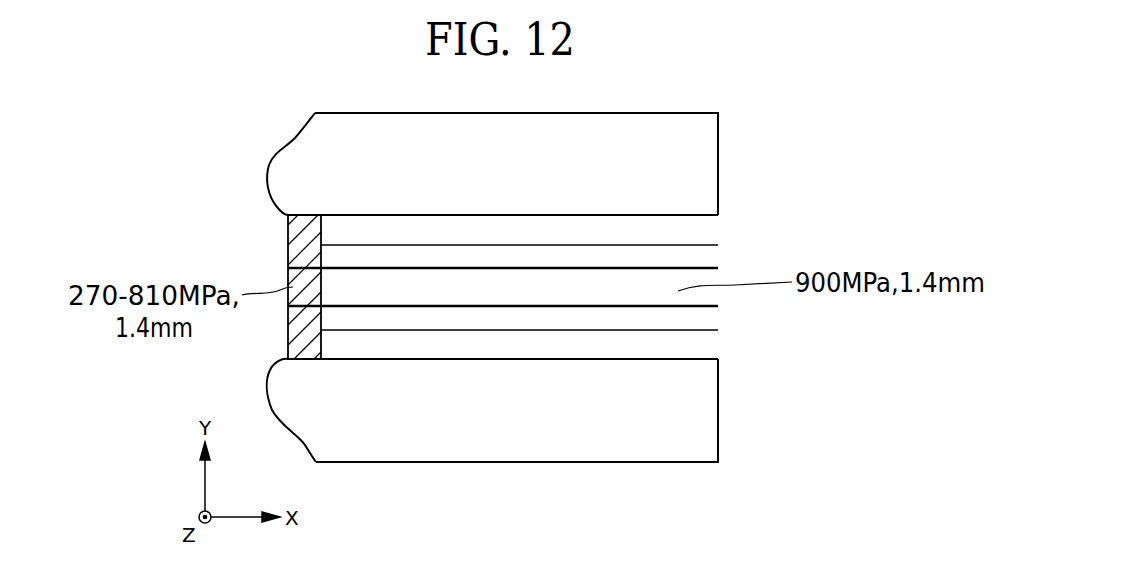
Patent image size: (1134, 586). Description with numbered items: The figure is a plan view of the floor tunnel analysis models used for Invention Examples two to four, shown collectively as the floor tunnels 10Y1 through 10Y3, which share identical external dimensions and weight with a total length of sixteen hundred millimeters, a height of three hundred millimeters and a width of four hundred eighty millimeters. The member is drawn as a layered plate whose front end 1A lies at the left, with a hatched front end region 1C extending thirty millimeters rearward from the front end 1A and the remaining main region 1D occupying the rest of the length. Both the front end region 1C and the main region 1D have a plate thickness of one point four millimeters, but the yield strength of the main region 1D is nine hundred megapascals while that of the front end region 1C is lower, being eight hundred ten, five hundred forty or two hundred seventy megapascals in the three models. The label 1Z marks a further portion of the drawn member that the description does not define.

The front end 1A is at (293, 257).
The front end region 1C is at (310, 359).
The main region 1D is at (498, 360).
The upper body portion 1Z is at (635, 215).
The floor tunnel of Invention Example 2 10Y1 is at (503, 241).
The floor tunnel of Invention Example 4 10Y3 is at (718, 345).